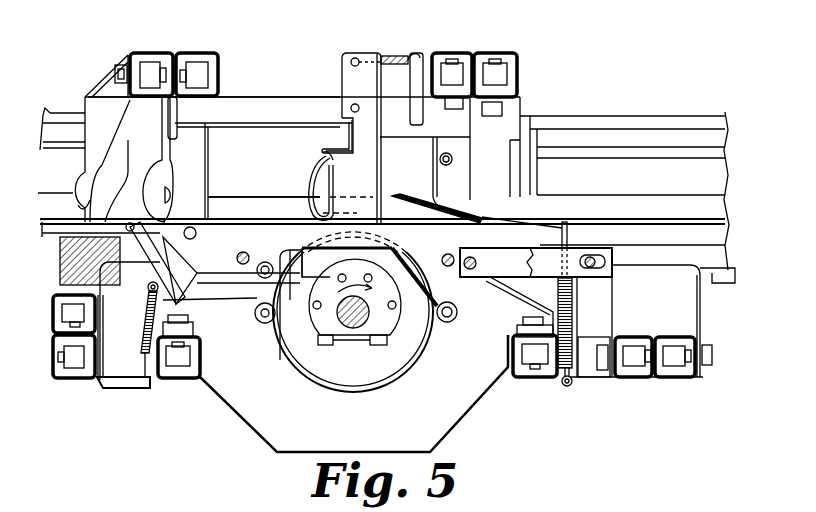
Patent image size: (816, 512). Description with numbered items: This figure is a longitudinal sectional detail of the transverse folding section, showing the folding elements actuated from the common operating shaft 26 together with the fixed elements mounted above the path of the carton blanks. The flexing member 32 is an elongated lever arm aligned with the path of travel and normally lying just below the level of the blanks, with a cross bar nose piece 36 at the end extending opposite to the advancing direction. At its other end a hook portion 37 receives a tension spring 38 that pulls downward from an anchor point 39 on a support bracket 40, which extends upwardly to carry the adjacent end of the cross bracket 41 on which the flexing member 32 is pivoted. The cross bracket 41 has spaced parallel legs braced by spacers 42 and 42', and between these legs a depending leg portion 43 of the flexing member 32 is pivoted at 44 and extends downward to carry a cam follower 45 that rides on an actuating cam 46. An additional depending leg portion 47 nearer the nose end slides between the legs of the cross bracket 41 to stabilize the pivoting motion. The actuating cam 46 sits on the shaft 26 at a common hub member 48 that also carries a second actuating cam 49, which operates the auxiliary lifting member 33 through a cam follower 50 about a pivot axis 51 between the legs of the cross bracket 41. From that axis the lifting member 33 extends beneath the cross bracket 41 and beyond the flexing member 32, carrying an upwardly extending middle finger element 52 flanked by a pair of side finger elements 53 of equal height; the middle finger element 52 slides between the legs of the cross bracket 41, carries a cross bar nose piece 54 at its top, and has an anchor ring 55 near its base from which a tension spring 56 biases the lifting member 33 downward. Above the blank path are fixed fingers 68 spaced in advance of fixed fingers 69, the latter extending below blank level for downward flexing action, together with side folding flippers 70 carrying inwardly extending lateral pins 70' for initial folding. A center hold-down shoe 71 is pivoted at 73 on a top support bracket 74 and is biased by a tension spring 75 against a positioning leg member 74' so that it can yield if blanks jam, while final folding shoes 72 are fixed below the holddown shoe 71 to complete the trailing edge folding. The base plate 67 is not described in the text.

The common operating shaft 26 is at (370, 315).
The flexing member 32 is at (257, 220).
The auxiliary lifting member 33 is at (205, 302).
The cross bar nose piece 36 is at (197, 232).
The hook portion 37 is at (569, 230).
The tension spring 38 is at (575, 297).
The anchor point 39 is at (567, 388).
The support bracket 40 is at (613, 311).
The cross bracket 41 is at (528, 280).
The spacer 42 is at (225, 259).
The spacer 42' is at (488, 262).
The depending leg portion 43 is at (450, 287).
The pivot 44 is at (443, 256).
The cam follower 45 is at (457, 318).
The actuating cam 46 is at (426, 362).
The additional depending leg portion 47 is at (298, 247).
The common hub member 48 is at (340, 345).
The second actuating cam 49 is at (305, 370).
The cam follower 50 is at (268, 323).
The pivot axis 51 is at (260, 276).
The middle finger element 52 is at (160, 262).
The side finger elements 53 is at (181, 288).
The cross bar nose piece 54 is at (129, 223).
The anchor ring 55 is at (148, 290).
The tension spring 56 is at (144, 330).
The base plate 67 is at (232, 410).
The fixed fingers 68 is at (83, 176).
The fixed fingers 69 is at (163, 163).
The side folding flippers 70 is at (302, 188).
The lateral pins 70' is at (305, 152).
The center hold-down shoe 71 is at (383, 167).
The final folding shoes 72 is at (405, 196).
The pivot 73 is at (356, 104).
The top support bracket 74 is at (214, 79).
The positioning leg member 74' is at (327, 135).
The tension spring 75 is at (393, 55).